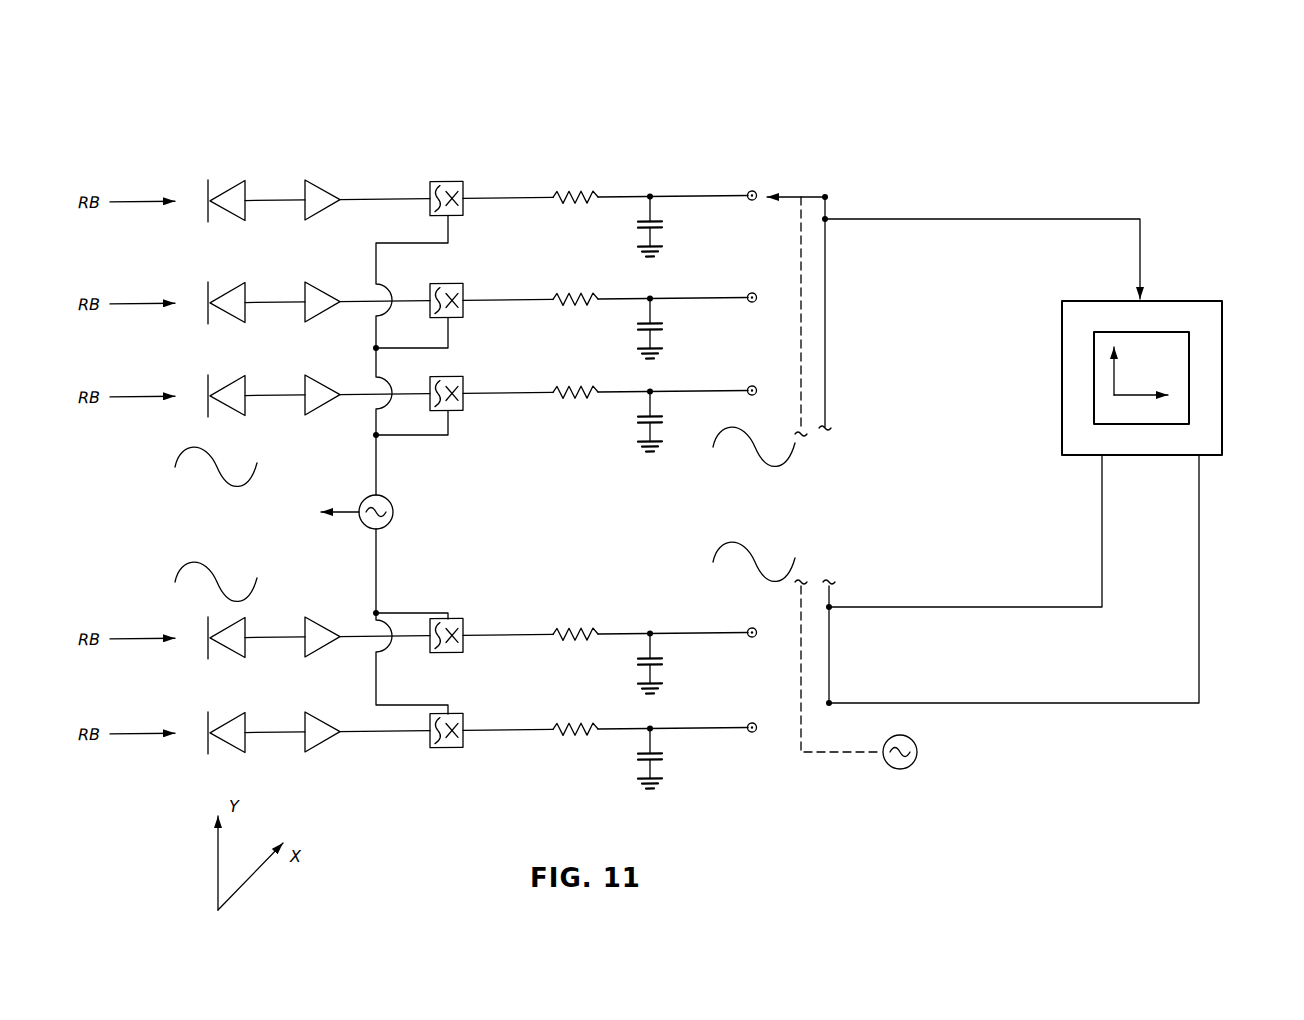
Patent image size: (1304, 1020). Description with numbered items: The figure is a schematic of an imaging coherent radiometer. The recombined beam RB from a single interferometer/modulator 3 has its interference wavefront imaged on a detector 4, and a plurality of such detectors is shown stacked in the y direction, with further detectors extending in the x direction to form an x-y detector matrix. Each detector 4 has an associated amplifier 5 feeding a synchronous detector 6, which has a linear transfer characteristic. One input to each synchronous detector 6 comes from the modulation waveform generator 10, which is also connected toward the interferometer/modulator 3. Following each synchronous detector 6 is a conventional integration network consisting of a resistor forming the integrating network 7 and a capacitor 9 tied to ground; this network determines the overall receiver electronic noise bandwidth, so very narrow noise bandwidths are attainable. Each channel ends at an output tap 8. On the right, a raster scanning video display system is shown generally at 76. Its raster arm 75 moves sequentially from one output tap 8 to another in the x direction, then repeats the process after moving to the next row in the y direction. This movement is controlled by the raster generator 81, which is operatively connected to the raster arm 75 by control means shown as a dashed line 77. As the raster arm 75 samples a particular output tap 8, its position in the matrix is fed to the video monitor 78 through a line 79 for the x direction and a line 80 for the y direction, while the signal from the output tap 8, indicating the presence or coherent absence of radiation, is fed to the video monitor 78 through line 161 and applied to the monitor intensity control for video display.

The interferometer/modulator 3 is at (239, 516).
The detector 4 is at (239, 171).
The amplifier 5 is at (340, 170).
The synchronous detector 6 is at (465, 168).
The integrating network 7 is at (599, 161).
The output tap 8 is at (777, 159).
The capacitor 9 is at (606, 225).
The modulation waveform generator 10 is at (396, 505).
The raster arm 75 is at (813, 195).
The raster scanning video display system 76 is at (1058, 380).
The control means 77 is at (799, 258).
The video monitor 78 is at (1185, 300).
The line for x-direction 79 is at (1200, 545).
The line for y-direction 80 is at (1100, 529).
The raster generator 81 is at (885, 762).
The line 161 is at (1088, 212).